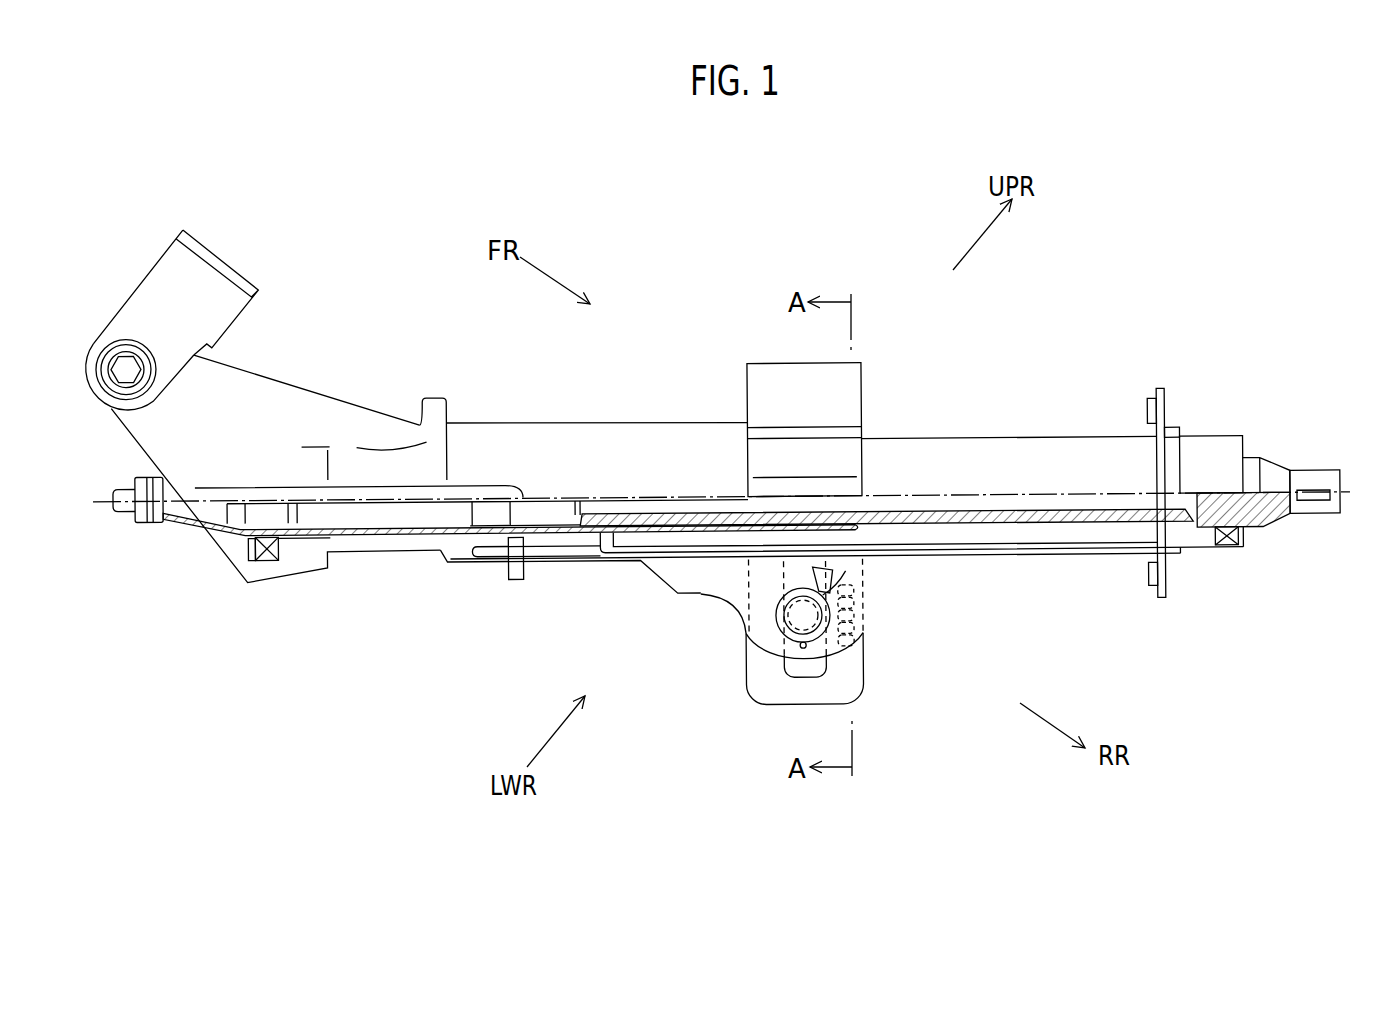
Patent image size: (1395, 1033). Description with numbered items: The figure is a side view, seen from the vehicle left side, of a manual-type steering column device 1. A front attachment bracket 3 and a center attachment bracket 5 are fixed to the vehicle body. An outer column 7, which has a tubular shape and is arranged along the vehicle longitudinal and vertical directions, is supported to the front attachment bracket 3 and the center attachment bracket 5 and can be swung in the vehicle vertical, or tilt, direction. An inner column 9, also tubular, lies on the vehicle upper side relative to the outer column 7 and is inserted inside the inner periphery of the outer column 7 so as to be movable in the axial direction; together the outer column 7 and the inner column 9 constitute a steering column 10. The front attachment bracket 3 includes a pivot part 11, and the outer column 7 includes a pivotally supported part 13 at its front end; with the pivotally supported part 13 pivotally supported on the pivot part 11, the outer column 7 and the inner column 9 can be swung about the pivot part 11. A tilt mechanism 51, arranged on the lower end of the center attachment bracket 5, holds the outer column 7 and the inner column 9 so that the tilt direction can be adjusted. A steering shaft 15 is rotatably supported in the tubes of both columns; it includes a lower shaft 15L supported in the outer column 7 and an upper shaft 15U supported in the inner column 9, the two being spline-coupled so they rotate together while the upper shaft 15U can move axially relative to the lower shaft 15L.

The steering column device 1 is at (714, 446).
The front attachment bracket 3 is at (205, 274).
The center attachment bracket 5 is at (777, 382).
The outer column 7 is at (653, 421).
The inner column 9 is at (981, 438).
The steering column 10 is at (831, 466).
The pivot part 11 is at (125, 363).
The pivotally supported part 13 is at (275, 402).
The steering shaft 15 is at (725, 500).
The lower shaft 15L is at (118, 510).
The upper shaft 15U is at (1287, 480).
The tilt mechanism 51 is at (869, 661).